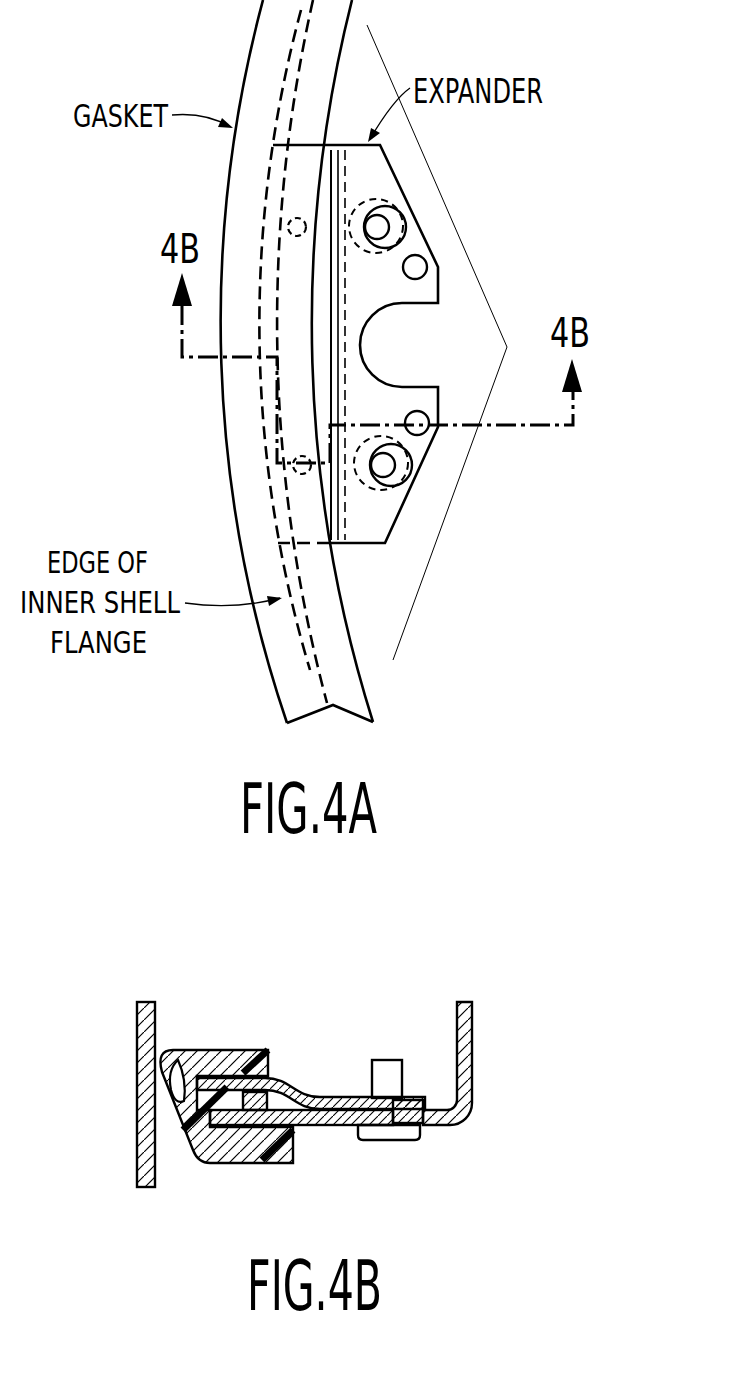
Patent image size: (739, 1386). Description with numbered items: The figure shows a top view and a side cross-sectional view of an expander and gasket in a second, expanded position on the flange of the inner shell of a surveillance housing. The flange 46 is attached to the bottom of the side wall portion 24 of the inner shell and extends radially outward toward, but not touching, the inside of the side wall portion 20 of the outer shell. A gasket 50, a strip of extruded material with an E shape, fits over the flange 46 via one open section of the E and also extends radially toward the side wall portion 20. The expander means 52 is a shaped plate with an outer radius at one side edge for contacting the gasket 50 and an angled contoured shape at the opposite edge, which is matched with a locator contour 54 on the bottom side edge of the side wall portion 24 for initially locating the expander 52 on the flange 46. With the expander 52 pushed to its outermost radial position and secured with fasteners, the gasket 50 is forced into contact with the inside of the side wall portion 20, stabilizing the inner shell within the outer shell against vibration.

In FIG. 4B, the side wall portion 20 is at (140, 1145).
In FIG. 4B, the side wall portion 24 is at (471, 1030).
In FIG. 4A, the flange 46 is at (380, 617).
In FIG. 4B, the flange 46 is at (328, 1123).
In FIG. 4A, the gasket 50 is at (288, 63).
In FIG. 4B, the gasket 50 is at (265, 1143).
In FIG. 4A, the expander means 52 is at (347, 173).
In FIG. 4B, the expander means 52 is at (302, 1078).
In FIG. 4A, the locator contour 54 is at (470, 273).